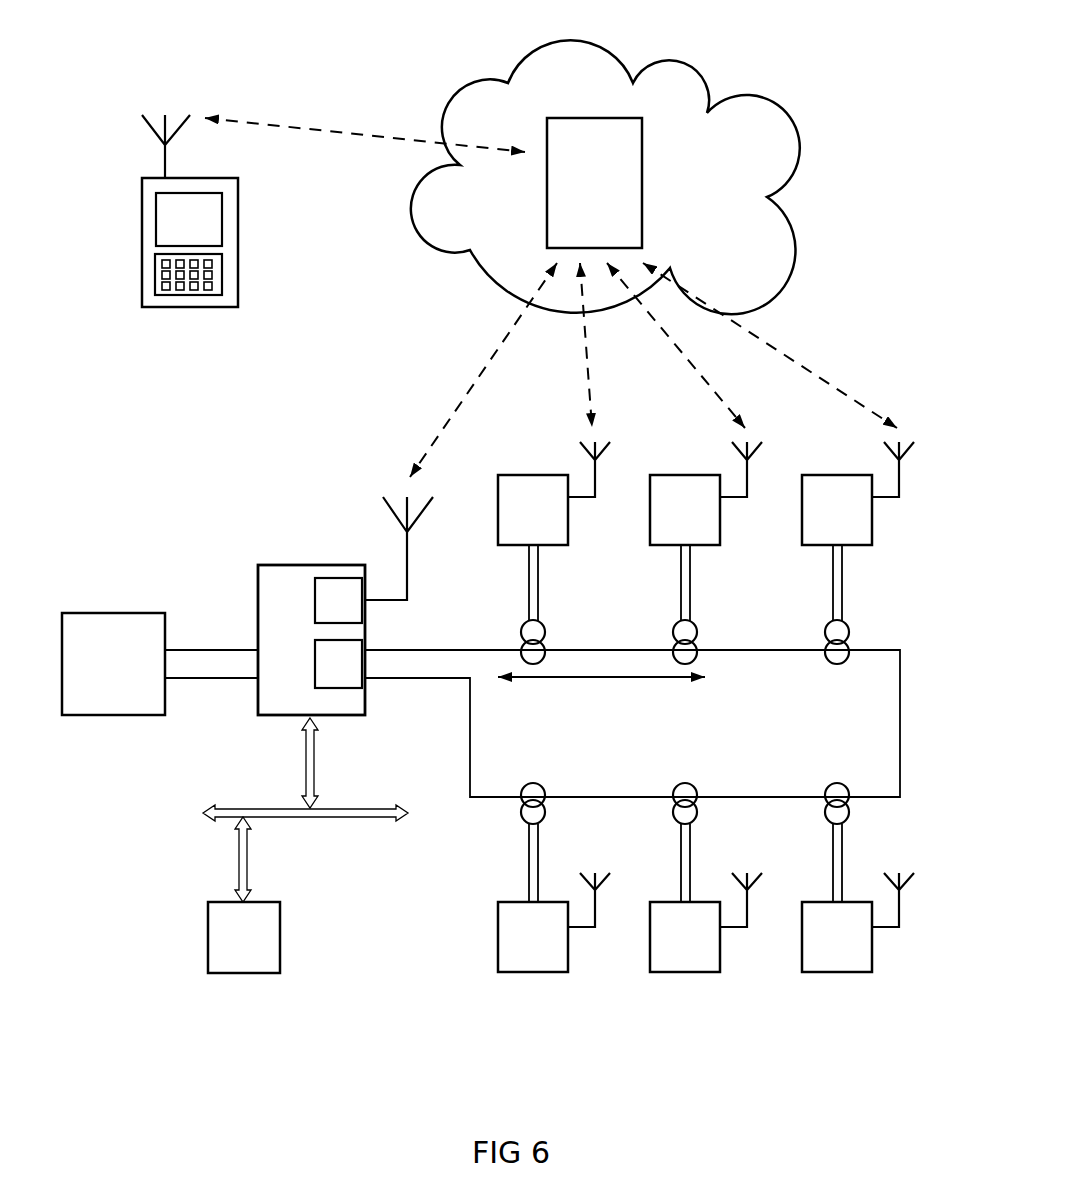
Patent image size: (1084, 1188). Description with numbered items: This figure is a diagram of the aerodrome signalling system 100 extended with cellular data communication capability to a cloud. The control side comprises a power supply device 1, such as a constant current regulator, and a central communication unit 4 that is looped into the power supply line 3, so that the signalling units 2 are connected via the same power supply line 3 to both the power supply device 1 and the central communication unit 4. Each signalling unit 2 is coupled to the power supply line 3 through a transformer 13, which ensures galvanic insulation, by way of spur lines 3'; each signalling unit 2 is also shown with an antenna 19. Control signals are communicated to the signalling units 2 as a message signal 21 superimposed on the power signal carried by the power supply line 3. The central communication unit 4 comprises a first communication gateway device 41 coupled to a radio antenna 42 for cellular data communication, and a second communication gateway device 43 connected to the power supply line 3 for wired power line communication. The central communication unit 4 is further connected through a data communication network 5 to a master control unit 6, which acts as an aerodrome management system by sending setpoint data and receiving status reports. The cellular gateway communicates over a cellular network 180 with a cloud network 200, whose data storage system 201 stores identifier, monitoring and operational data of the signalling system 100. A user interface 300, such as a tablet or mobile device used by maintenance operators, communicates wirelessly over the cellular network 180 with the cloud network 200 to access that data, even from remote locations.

The user interface 300 is at (112, 163).
The cloud network 200 is at (750, 113).
The data storage system 201 is at (642, 170).
The cellular network 180 is at (807, 325).
The signalling system 100 is at (255, 498).
The power supply device 1 is at (112, 715).
The power supply line 3 is at (532, 725).
The spur lines 3' is at (714, 723).
The central communication unit 4 is at (272, 718).
The first communication gateway device 41 is at (338, 578).
The radio antenna 42 is at (407, 558).
The second communication gateway device 43 is at (338, 688).
The data communication network 5 is at (350, 818).
The master control unit 6 is at (243, 973).
The signalling units 2 is at (533, 475).
The device antenna 19 is at (595, 482).
The transformer 13 is at (522, 632).
The message signal 21 is at (588, 680).